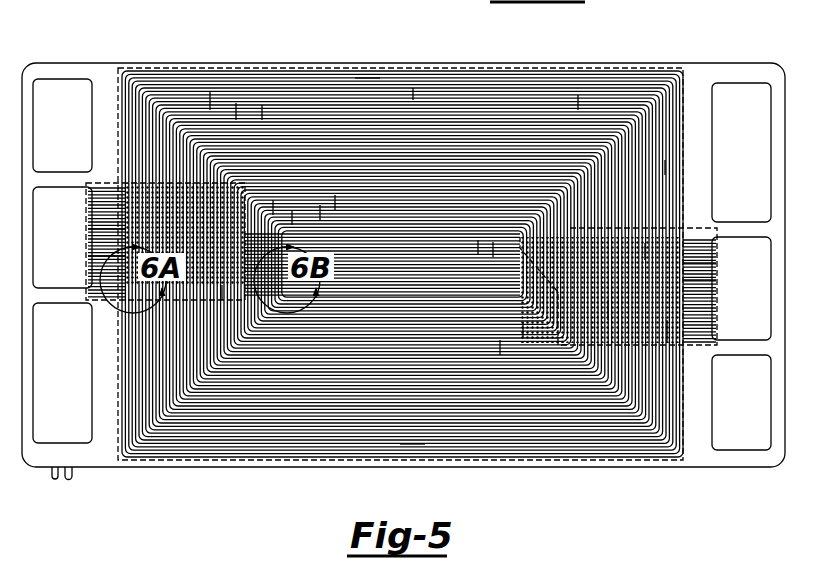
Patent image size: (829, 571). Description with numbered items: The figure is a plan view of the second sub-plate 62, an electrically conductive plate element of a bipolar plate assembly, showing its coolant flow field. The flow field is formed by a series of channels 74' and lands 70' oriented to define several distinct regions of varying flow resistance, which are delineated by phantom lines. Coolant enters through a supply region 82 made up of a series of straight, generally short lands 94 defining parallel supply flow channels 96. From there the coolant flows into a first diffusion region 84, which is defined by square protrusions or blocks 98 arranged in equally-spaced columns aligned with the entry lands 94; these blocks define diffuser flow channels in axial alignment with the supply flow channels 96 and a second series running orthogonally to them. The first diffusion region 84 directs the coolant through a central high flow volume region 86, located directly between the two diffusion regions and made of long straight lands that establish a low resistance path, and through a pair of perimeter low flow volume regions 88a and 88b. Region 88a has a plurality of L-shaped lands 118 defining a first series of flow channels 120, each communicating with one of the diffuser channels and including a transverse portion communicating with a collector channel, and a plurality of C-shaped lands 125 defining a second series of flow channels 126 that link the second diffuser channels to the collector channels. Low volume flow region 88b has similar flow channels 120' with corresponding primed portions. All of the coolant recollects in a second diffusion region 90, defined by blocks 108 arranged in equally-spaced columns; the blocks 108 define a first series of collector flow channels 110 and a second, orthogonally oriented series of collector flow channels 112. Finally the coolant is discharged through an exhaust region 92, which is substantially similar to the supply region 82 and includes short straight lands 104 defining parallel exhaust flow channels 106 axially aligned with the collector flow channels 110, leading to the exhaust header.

The second sub-plate 62 is at (751, 66).
The lands 70' is at (402, 287).
The channels 74' is at (398, 287).
The supply region 82 is at (110, 177).
The first diffusion region 84 is at (156, 191).
The central high flow volume region 86 is at (401, 242).
The perimeter low flow volume region 88a is at (357, 76).
The perimeter low flow volume region 88b is at (412, 444).
The second diffusion region 90 is at (586, 242).
The exhaust region 92 is at (697, 237).
The lands 94 is at (103, 228).
The supply flow channels 96 is at (128, 252).
The blocks 98 is at (222, 290).
The lands 104 is at (703, 262).
The exhaust flow channels 106 is at (693, 280).
The blocks 108 is at (667, 330).
The collector flow channels 110 is at (608, 300).
The collector flow channels 112 is at (645, 243).
The L-shaped lands 118 is at (300, 218).
The flow channels 120 is at (333, 115).
The flow channels 120' is at (525, 411).
The C-shaped lands 125 is at (262, 105).
The flow channels 126 is at (413, 88).